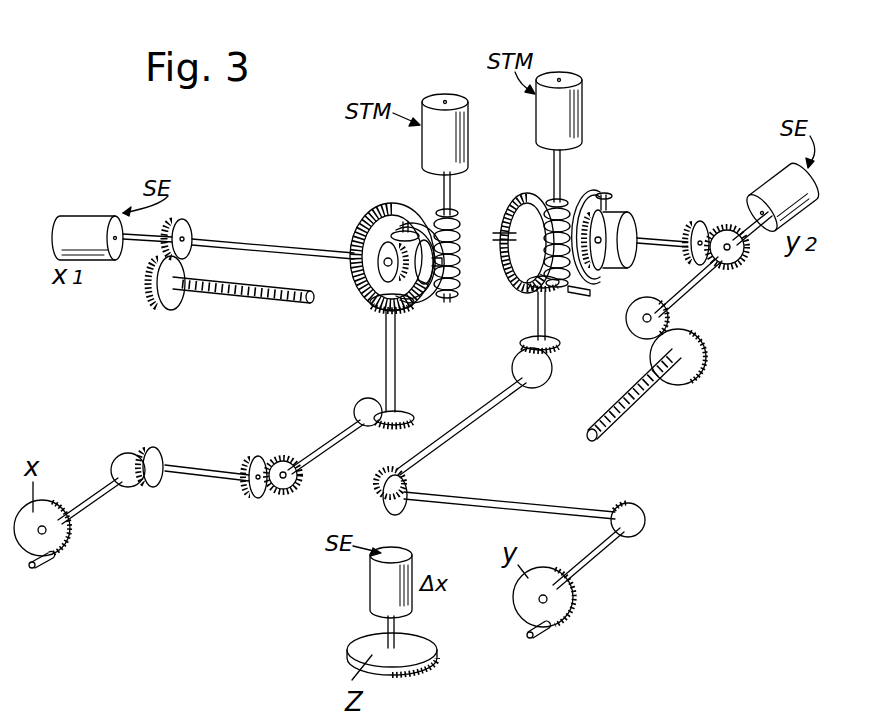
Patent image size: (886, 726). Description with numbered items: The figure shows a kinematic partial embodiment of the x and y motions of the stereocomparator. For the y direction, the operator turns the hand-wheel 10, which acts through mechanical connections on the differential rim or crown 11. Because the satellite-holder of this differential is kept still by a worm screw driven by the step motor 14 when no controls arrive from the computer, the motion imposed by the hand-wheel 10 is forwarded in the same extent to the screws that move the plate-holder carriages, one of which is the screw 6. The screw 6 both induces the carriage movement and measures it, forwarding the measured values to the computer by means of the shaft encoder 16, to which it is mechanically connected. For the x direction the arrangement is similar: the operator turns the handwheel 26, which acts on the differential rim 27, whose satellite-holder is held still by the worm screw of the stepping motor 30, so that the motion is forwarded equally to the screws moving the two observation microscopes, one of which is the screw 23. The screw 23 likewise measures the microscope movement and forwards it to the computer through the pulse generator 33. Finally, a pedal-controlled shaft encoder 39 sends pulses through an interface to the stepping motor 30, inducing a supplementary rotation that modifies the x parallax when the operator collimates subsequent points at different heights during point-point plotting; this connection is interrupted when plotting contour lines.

The pulse generator 33 is at (82, 217).
The screw 23 is at (220, 298).
The differential rim 27 is at (362, 222).
The stepping motor 30 is at (440, 95).
The differential rim or crown 11 is at (520, 200).
The step motor 14 is at (565, 76).
The shaft encoder 16 is at (777, 184).
The screw 6 is at (645, 408).
The handwheel 26 is at (75, 545).
The shaft encoder 39 is at (372, 591).
The hand-wheel 10 is at (562, 620).